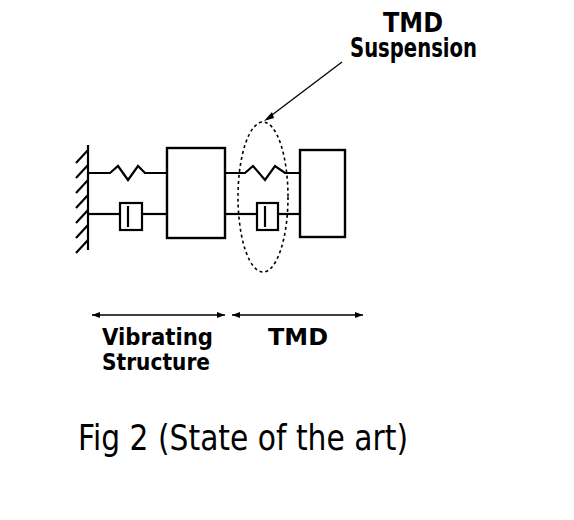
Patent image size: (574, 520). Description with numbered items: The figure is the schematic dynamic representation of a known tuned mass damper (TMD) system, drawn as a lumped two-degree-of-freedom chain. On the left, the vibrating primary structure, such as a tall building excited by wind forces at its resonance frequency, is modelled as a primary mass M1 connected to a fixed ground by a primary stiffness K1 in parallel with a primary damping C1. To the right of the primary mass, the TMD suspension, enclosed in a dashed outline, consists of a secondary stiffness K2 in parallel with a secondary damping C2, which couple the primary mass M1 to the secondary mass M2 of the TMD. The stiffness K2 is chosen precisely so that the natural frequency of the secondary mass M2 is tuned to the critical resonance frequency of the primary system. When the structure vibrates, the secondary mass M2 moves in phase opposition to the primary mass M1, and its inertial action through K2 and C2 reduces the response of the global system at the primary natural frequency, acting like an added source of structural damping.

The stiffness (spring) of vibrating structure K1 is at (127, 160).
The damping of vibrating structure C1 is at (127, 229).
The mass of vibrating structure M1 is at (196, 193).
The stiffness (spring) of TMD suspension K2 is at (262, 161).
The damping of TMD suspension C2 is at (262, 230).
The mass of TMD M2 is at (322, 193).